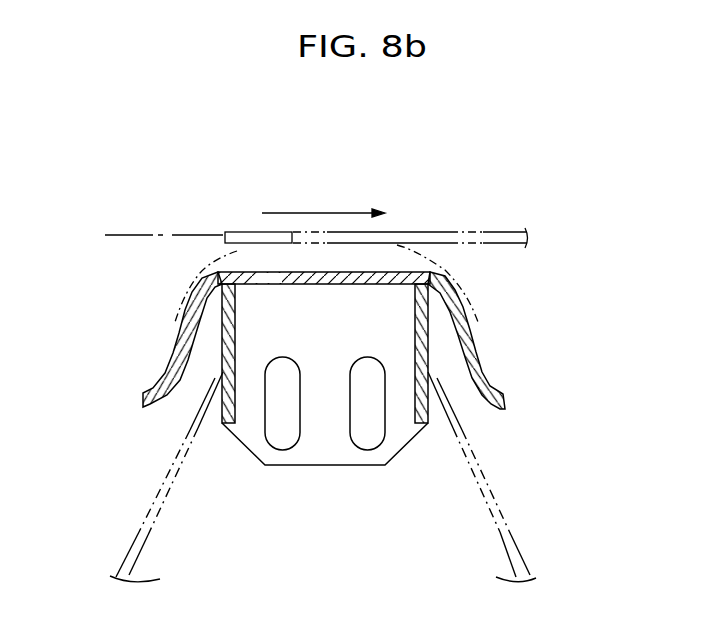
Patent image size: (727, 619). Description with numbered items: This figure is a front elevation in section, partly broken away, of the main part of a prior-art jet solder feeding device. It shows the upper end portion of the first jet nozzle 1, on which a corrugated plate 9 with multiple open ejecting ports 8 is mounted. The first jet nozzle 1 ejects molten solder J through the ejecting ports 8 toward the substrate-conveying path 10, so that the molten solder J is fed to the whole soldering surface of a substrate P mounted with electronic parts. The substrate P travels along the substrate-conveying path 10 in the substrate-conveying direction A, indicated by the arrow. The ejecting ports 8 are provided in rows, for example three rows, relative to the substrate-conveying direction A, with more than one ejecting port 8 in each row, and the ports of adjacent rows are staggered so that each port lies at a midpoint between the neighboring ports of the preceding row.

The first jet nozzle 1 is at (507, 449).
The ejecting ports 8 is at (262, 272).
The corrugated plate 9 is at (473, 358).
The substrate-conveying path 10 is at (128, 234).
The molten solder J is at (265, 257).
The substrate P is at (500, 232).
The substrate-conveying direction A is at (323, 201).